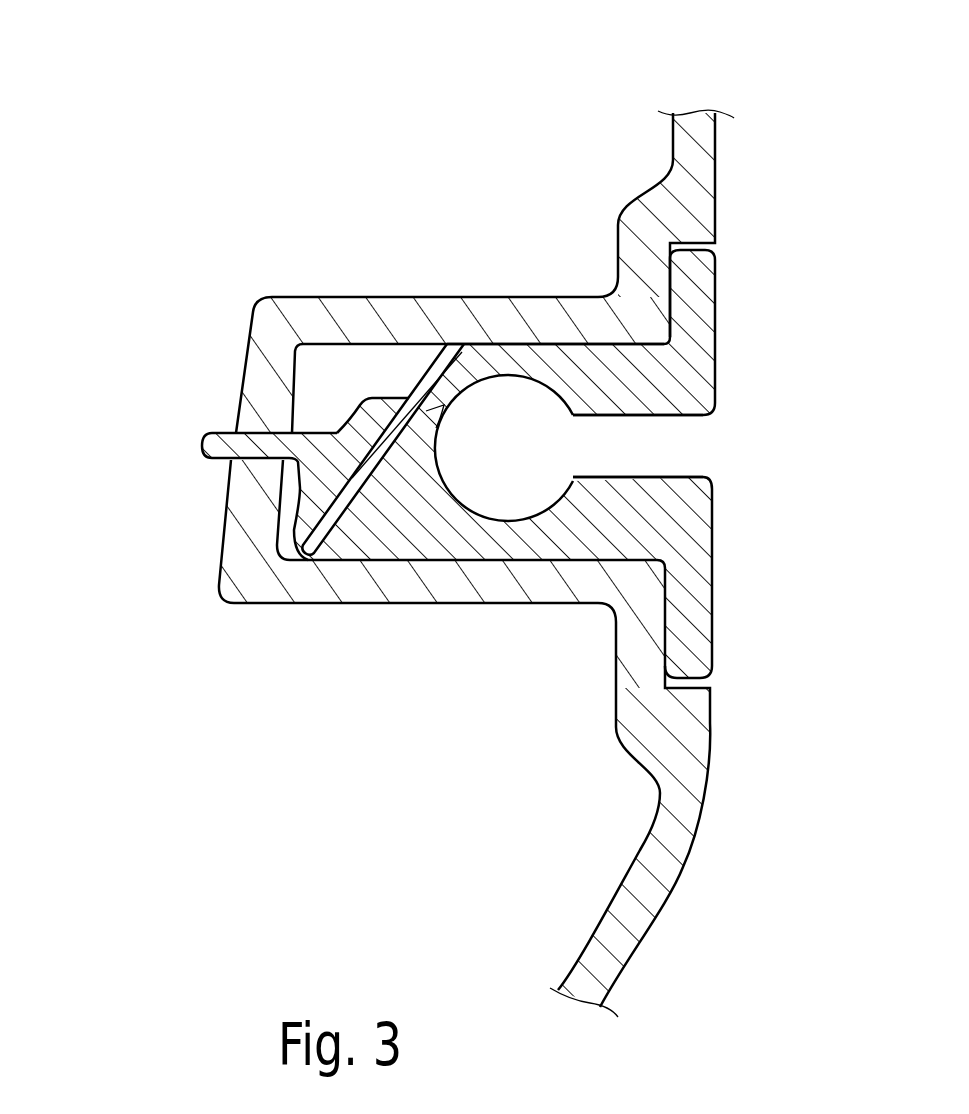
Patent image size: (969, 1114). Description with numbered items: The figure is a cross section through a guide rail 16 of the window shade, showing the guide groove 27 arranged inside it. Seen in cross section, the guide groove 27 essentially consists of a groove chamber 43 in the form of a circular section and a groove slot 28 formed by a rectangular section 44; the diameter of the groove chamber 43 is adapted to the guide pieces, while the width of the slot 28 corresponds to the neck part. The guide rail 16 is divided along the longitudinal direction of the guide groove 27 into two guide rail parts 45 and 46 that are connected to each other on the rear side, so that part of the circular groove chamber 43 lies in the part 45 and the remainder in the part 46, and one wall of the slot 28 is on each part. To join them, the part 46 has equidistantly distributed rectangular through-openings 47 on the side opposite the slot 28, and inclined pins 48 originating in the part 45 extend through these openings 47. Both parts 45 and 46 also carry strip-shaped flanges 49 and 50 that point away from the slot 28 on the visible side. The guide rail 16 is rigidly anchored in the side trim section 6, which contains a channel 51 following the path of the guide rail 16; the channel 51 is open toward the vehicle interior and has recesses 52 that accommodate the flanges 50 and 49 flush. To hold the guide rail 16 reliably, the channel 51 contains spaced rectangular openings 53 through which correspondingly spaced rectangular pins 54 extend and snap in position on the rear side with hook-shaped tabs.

The guide rail 16 is at (795, 155).
The guide rail part 45 is at (593, 363).
The groove chamber 43 is at (510, 402).
The strip-shaped flange 49 is at (697, 288).
The rectangular section 44 is at (678, 438).
The guide groove 27 is at (765, 462).
The groove slot 28 is at (690, 475).
The channel 51 is at (320, 398).
The rectangular pin 54 is at (212, 431).
The rectangular opening 53 is at (262, 470).
The rectangular through-opening 47 is at (300, 515).
The pin 48 is at (312, 556).
The guide rail part 46 is at (574, 545).
The strip-shaped flange 50 is at (692, 645).
The recess 52 is at (710, 685).
The side trim section 6 is at (653, 892).